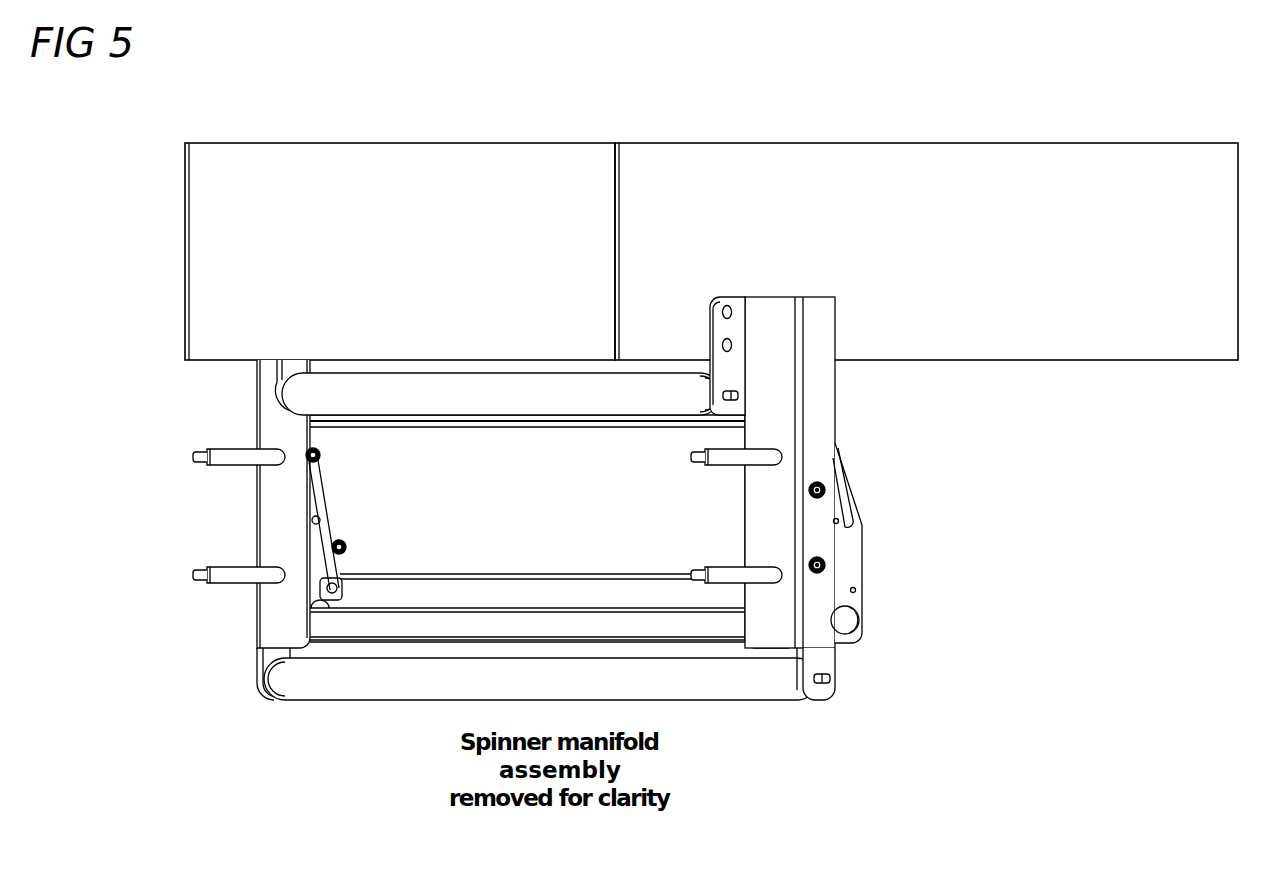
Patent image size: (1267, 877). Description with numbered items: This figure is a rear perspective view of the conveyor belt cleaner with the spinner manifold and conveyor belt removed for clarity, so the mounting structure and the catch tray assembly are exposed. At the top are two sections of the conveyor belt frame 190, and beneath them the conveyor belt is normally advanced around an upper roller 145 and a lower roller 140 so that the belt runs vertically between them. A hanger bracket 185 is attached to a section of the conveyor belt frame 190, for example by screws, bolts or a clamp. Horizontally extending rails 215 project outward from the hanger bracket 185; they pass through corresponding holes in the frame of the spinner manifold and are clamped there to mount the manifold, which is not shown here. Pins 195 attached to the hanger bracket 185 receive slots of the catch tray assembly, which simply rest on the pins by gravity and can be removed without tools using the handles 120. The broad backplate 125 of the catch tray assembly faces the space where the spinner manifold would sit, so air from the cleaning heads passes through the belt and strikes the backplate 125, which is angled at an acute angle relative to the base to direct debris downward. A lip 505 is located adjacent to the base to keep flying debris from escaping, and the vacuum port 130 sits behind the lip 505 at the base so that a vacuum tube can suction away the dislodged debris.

The conveyor belt frame 190 is at (711, 251).
The hanger bracket 185 is at (710, 326).
The upper roller 145 is at (285, 390).
The lower roller 140 is at (283, 703).
The backplate 125 is at (527, 498).
The rails 215 is at (194, 457).
The pins 195 is at (826, 490).
The handles 120 is at (845, 452).
The vacuum port 130 is at (858, 622).
The lip 505 is at (657, 595).